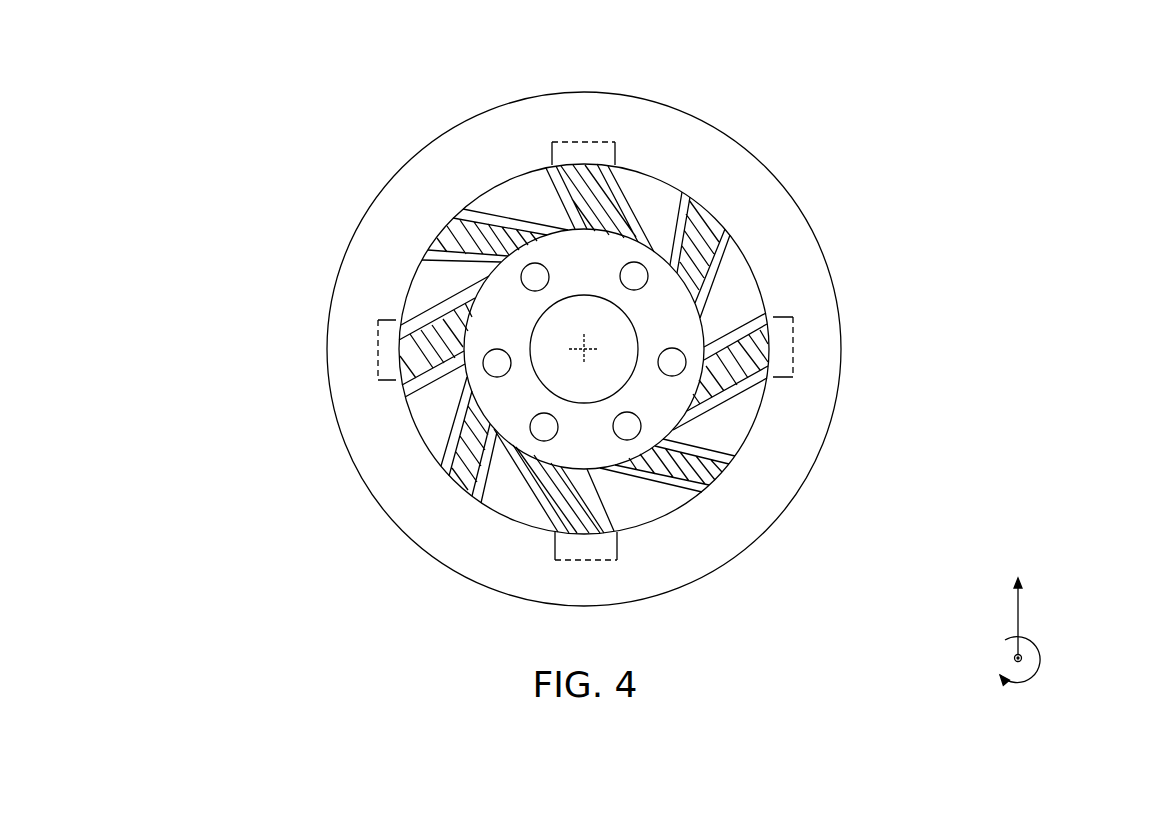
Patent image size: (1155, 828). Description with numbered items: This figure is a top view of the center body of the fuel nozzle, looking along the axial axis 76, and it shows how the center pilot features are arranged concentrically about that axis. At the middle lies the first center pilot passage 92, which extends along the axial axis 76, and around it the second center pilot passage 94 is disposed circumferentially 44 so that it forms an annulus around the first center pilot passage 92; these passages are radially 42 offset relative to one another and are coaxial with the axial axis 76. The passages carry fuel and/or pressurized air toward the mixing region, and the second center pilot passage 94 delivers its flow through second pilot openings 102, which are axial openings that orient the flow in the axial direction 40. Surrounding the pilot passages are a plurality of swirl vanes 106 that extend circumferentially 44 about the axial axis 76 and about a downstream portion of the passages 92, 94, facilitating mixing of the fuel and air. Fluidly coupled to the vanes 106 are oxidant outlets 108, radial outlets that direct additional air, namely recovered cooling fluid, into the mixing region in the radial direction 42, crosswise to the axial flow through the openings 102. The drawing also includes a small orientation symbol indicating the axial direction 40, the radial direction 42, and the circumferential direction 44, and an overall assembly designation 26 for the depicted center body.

The fan assembly 26 is at (283, 113).
The axial axis 76 is at (586, 352).
The first center pilot passage 92 is at (553, 348).
The second center pilot passage 94 is at (595, 257).
The second pilot opening 102 is at (672, 362).
The swirl vane 106 is at (729, 296).
The oxidant outlet 108 is at (377, 340).
The axial direction 40 is at (1016, 658).
The radial direction 42 is at (1020, 612).
The circumferential direction 44 is at (1045, 657).